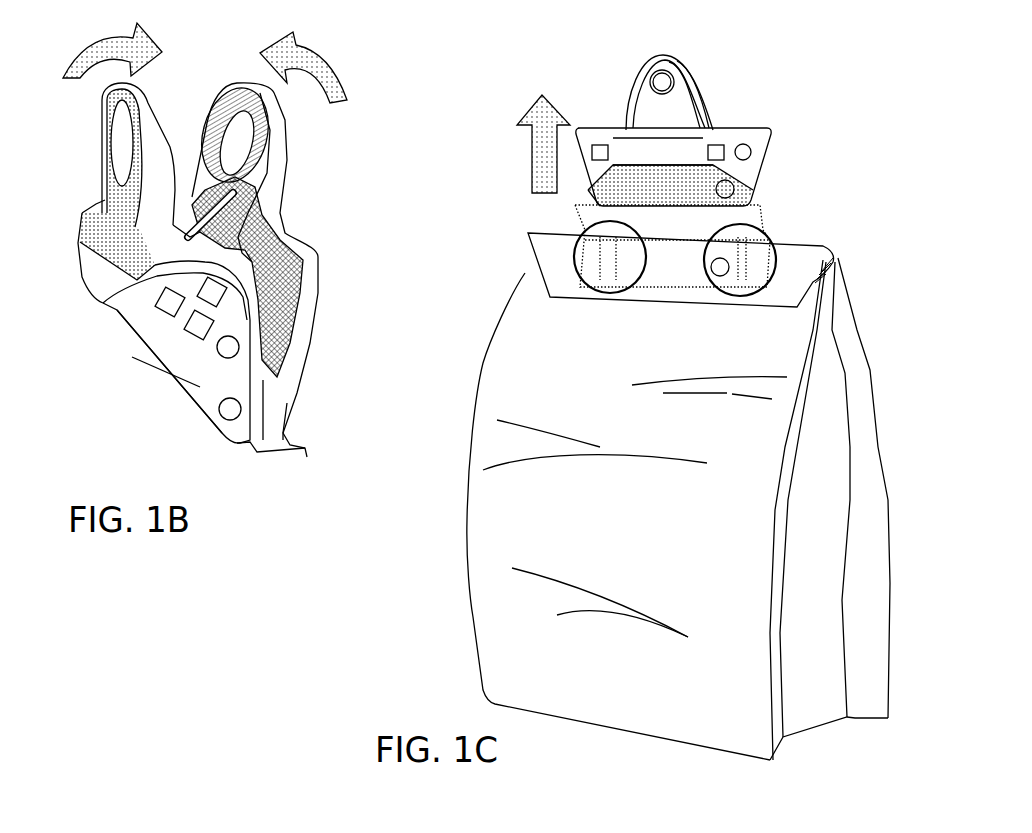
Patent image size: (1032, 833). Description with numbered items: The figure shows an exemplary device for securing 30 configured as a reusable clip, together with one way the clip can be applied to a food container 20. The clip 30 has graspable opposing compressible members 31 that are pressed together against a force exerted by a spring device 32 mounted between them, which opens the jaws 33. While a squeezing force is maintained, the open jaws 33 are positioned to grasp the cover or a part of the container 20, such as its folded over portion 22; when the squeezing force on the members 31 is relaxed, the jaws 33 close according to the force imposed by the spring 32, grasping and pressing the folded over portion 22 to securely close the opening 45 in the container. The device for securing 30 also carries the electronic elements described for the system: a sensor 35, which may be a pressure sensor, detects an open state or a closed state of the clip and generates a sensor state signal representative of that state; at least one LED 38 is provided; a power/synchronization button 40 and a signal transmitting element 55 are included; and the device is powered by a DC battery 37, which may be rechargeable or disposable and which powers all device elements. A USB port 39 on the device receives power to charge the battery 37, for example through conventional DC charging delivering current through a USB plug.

In FIG. 1C, the food container 20 is at (847, 373).
In FIG. 1C, the folded over portion 22 is at (807, 280).
In FIG. 1B, the device for securing 30 is at (300, 235).
In FIG. 1C, the device for securing 30 is at (755, 118).
In FIG. 1B, the compressible members 31 is at (102, 123).
In FIG. 1B, the spring device 32 is at (190, 200).
In FIG. 1B, the jaws 33 is at (283, 415).
In FIG. 1B, the sensor 35 is at (227, 415).
In FIG. 1C, the sensor 35 is at (728, 187).
In FIG. 1B, the DC battery 37 is at (155, 288).
In FIG. 1C, the DC battery 37 is at (718, 143).
In FIG. 1B, the LED 38 is at (239, 347).
In FIG. 1C, the LED 38 is at (745, 148).
In FIG. 1C, the USB port 39 is at (602, 145).
In FIG. 1B, the power/synchronization button 40 is at (168, 305).
In FIG. 1C, the opening 45 is at (578, 232).
In FIG. 1B, the signal transmitting element 55 is at (192, 332).